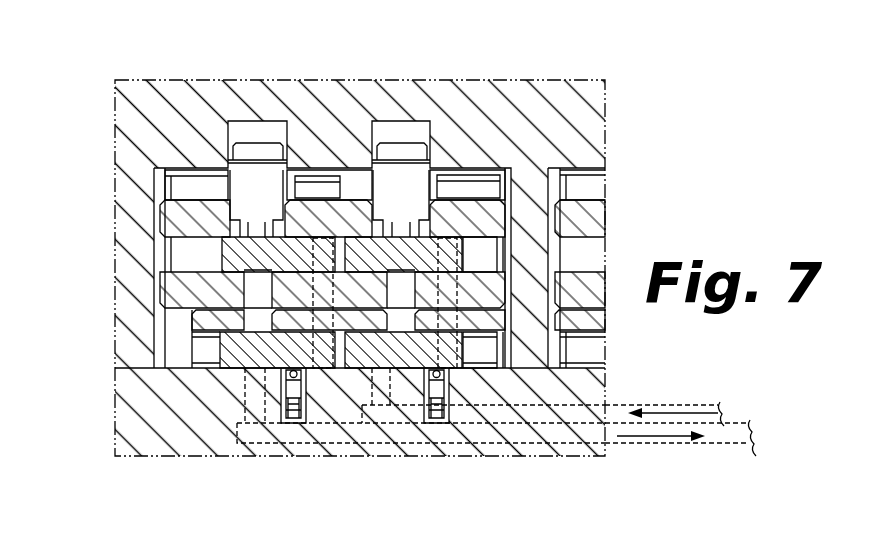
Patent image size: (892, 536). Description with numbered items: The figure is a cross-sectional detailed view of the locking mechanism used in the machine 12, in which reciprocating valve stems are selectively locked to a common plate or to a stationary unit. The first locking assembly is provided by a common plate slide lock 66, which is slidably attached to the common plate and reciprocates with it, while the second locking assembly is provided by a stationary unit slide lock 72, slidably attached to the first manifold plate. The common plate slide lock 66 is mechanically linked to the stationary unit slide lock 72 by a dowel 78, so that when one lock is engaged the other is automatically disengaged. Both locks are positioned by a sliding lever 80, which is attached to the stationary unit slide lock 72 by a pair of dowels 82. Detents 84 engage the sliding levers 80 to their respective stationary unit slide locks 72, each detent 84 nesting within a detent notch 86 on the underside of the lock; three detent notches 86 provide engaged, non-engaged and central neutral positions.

The machine 12 is at (561, 66).
The common plate slide lock 66 is at (403, 253).
The stationary unit slide lock 72 is at (250, 348).
The dowel 78 is at (313, 238).
The sliding lever 80 is at (683, 405).
The dowels 82 is at (245, 400).
The detent 84 is at (282, 390).
The detent notch 86 is at (313, 368).